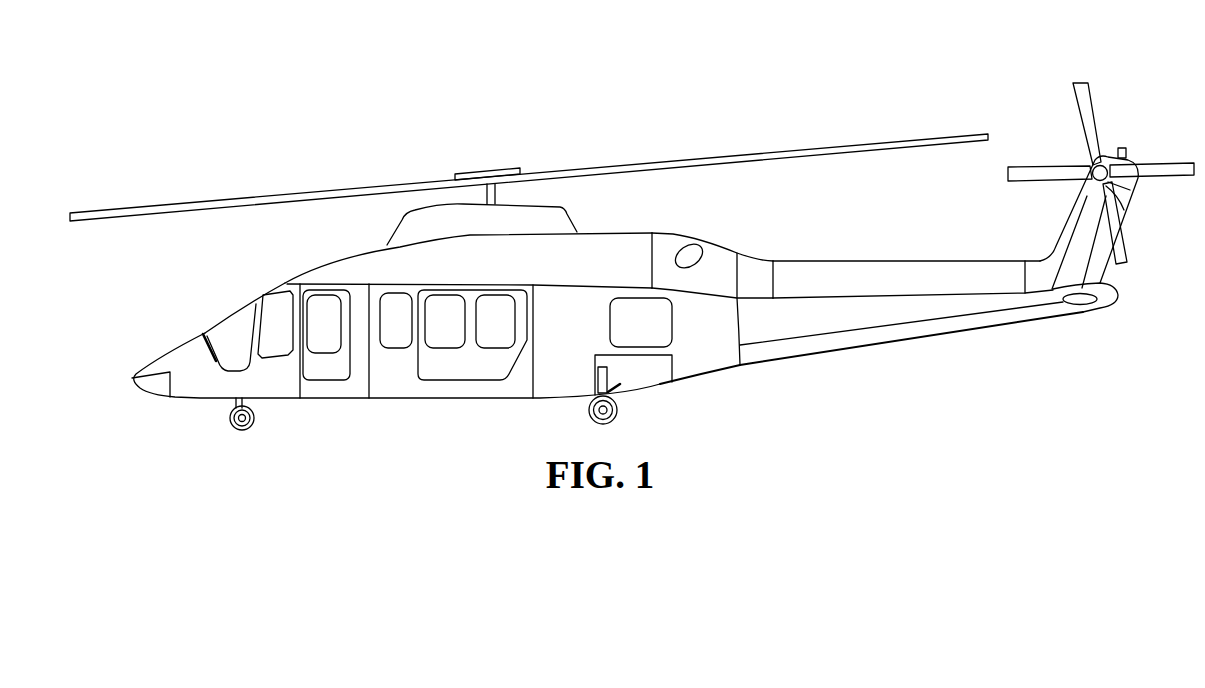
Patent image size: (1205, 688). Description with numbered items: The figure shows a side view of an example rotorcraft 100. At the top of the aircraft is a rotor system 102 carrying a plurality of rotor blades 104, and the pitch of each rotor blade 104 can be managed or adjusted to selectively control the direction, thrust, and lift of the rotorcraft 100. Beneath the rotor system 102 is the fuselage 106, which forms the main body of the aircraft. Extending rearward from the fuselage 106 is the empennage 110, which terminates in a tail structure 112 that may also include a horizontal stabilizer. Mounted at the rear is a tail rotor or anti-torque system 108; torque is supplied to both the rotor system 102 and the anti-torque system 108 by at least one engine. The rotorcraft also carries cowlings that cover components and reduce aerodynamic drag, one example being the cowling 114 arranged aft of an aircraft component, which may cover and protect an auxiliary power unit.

The rotorcraft 100 is at (253, 74).
The rotor system 102 is at (501, 152).
The rotor blade 104 is at (243, 198).
The fuselage 106 is at (400, 398).
The tail rotor or anti-torque system 108 is at (1124, 130).
The empennage 110 is at (952, 339).
The tail structure 112 is at (1081, 306).
The cowling 114 is at (702, 238).